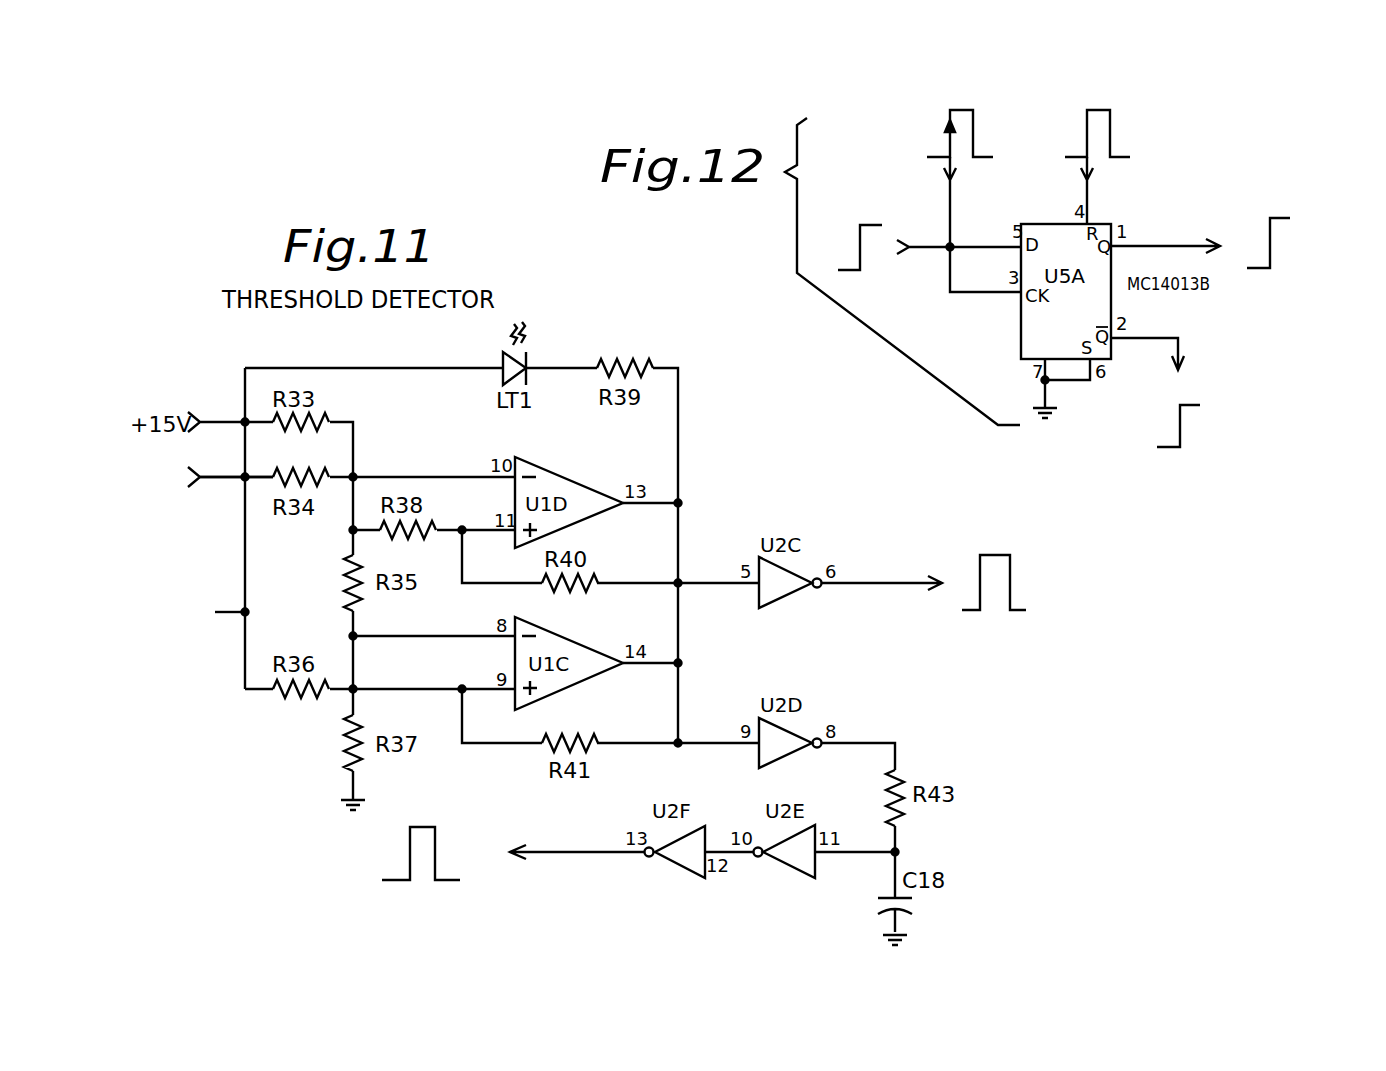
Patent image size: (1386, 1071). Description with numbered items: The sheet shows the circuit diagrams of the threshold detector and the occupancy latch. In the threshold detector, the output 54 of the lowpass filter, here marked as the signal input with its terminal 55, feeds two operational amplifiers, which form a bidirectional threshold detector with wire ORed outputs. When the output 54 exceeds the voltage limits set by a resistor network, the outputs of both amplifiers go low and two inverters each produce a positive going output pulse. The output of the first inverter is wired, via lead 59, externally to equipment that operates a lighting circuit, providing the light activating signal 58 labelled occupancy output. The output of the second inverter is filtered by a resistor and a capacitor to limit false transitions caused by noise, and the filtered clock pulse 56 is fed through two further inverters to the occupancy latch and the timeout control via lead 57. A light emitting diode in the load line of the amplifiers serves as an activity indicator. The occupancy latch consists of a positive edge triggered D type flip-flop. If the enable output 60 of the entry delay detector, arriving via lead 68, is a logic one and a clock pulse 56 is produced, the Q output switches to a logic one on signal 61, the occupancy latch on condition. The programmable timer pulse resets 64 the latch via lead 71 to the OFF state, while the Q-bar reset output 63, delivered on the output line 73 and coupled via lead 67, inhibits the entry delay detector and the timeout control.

In FIG. 11, the output of the lowpass filter 54 is at (214, 521).
In FIG. 11, the signal input terminal 55 is at (230, 476).
In FIG. 11, the clock pulse 56 is at (436, 853).
In FIG. 12, the clock pulse 56 is at (974, 135).
In FIG. 11, the lead 57 is at (550, 853).
In FIG. 11, the light activating signal 58 is at (1010, 592).
In FIG. 11, the lead 59 is at (870, 583).
In FIG. 12, the output of the Entry Delay Detector 60 is at (857, 253).
In FIG. 12, the signal 61 is at (1271, 248).
In FIG. 12, the reset output 63 is at (1181, 425).
In FIG. 12, the reset 64 is at (1087, 136).
In FIG. 12, the lead 67 is at (1180, 342).
In FIG. 12, the lead 68 is at (928, 249).
In FIG. 12, the lead 71 is at (1088, 196).
In FIG. 12, the latch output line 73 is at (1170, 246).